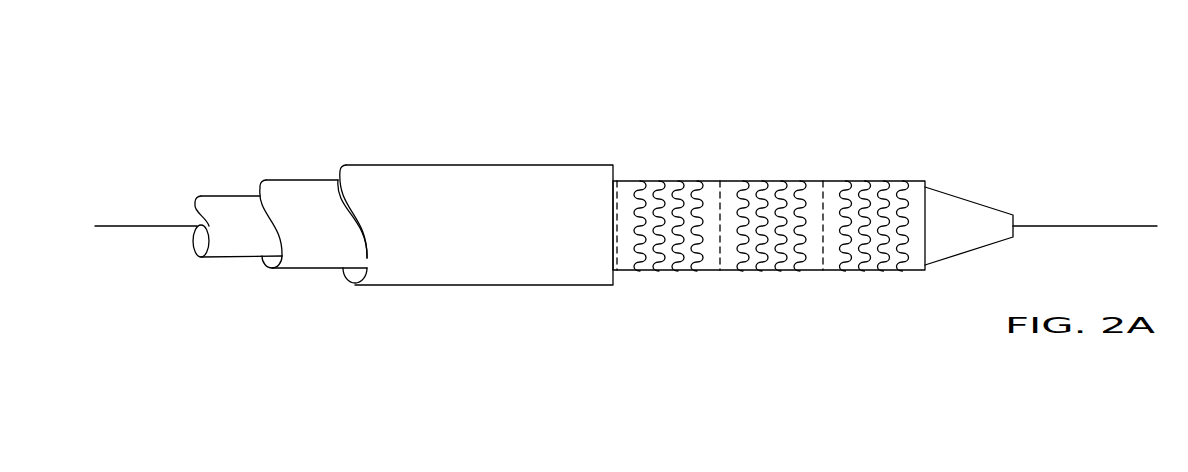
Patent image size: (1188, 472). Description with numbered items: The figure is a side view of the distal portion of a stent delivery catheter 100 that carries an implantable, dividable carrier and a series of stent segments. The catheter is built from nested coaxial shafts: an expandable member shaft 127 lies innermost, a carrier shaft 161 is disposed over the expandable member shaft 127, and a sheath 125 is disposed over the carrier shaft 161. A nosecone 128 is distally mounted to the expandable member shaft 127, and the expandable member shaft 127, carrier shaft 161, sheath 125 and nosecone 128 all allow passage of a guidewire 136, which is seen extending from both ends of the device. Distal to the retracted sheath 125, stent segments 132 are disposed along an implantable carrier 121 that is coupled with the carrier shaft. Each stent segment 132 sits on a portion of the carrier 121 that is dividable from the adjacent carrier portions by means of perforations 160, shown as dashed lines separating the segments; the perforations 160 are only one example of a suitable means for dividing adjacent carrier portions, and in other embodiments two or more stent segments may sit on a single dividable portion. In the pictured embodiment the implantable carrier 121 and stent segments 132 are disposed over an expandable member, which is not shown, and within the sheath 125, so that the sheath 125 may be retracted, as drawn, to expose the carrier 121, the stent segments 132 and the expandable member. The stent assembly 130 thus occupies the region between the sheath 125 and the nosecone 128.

The stent delivery catheter 100 is at (691, 64).
The implantable carrier 121 is at (703, 274).
The sheath 125 is at (467, 182).
The expandable member shaft 127 is at (226, 200).
The nosecone 128 is at (965, 210).
The stent 130 is at (670, 178).
The stent segments 132 is at (830, 181).
The guidewire 136 is at (149, 223).
The perforations 160 is at (721, 274).
The carrier shaft 161 is at (297, 192).